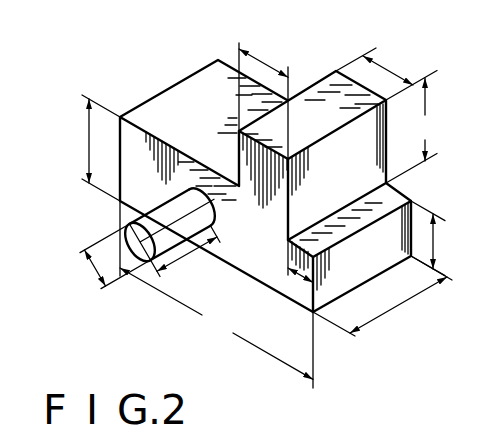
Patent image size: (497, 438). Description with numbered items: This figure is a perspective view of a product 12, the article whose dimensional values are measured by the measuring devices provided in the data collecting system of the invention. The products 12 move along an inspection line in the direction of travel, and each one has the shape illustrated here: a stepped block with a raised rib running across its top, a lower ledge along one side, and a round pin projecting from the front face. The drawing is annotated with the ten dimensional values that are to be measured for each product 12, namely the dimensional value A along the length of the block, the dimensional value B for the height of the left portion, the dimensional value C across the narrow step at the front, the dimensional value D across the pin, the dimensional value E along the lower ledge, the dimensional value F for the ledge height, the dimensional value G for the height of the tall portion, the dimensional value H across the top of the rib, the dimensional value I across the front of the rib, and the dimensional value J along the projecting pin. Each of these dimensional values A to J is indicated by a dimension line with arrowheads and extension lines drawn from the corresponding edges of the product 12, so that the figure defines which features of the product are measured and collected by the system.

The product 12 is at (317, 69).
The dimensional value A is at (216, 294).
The dimensional value B is at (93, 148).
The dimensional value C is at (300, 270).
The dimensional value D is at (110, 257).
The dimensional value E is at (382, 296).
The dimensional value F is at (432, 238).
The dimensional value G is at (411, 127).
The dimensional value H is at (374, 66).
The dimensional value I is at (263, 97).
The dimensional value J is at (186, 253).